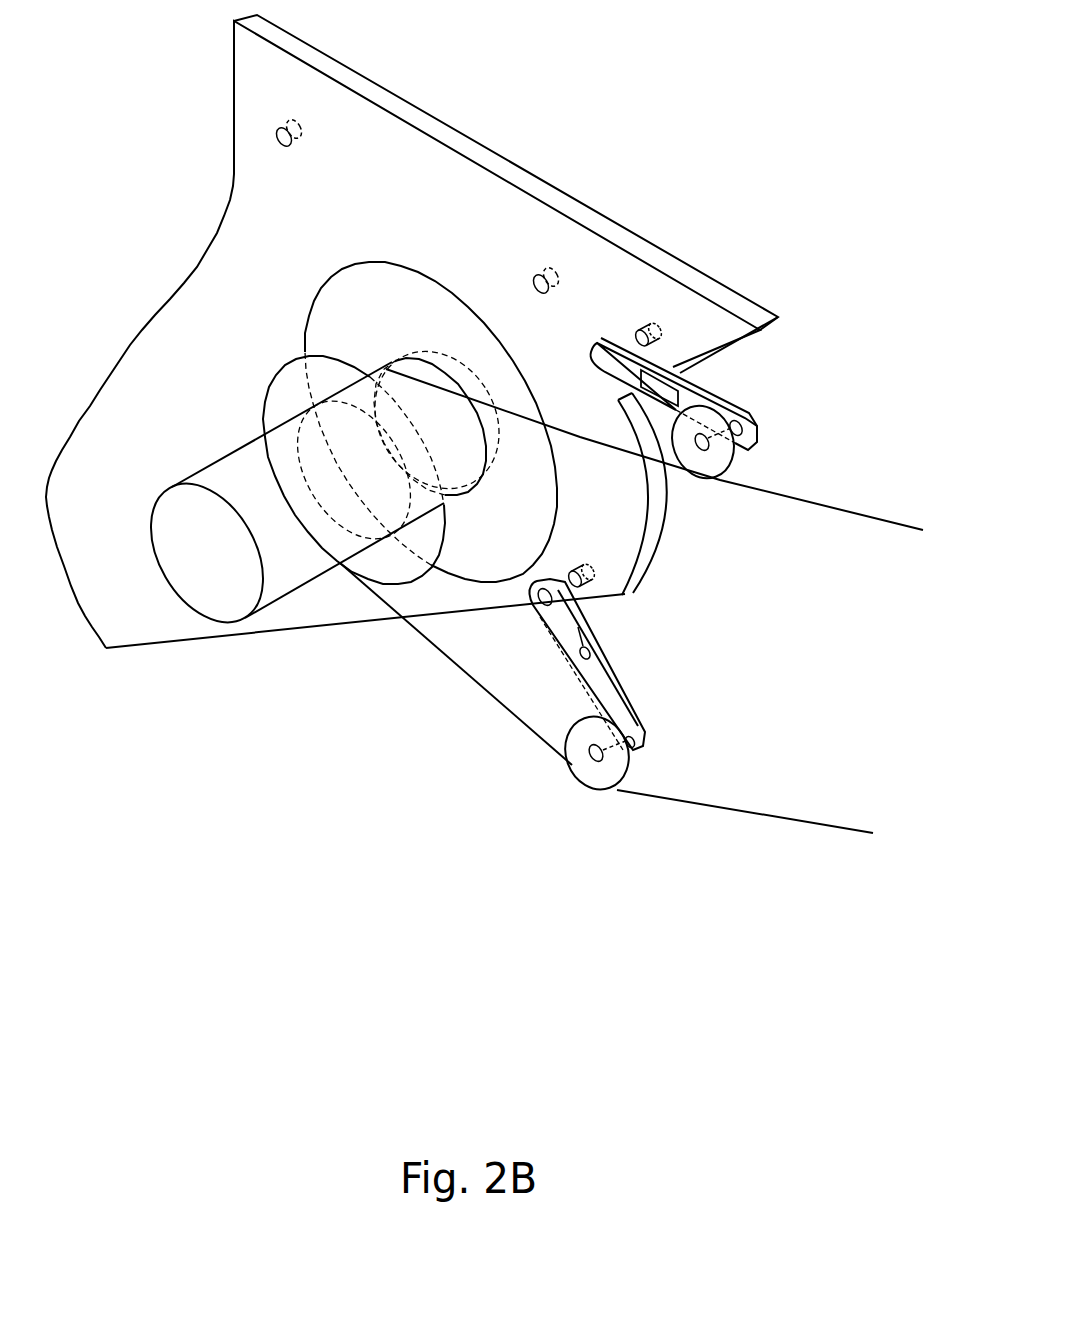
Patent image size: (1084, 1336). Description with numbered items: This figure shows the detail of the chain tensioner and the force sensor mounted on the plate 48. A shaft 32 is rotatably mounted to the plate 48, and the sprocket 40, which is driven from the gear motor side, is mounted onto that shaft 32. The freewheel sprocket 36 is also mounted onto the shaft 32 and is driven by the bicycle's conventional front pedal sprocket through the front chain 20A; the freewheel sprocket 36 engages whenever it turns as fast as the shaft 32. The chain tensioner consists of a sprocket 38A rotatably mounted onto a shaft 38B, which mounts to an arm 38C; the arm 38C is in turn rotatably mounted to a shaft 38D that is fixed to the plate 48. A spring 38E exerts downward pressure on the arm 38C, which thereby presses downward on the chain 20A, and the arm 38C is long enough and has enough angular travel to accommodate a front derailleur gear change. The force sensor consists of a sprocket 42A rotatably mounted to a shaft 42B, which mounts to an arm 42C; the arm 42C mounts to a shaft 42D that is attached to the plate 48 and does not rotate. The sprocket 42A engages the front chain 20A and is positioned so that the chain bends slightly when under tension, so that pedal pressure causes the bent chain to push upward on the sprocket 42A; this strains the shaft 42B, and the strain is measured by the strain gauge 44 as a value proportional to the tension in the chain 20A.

The front chain 20A is at (893, 528).
The shaft 32 is at (293, 602).
The freewheel sprocket 36 is at (270, 363).
The sprocket 38A is at (590, 790).
The shaft 38B is at (633, 747).
The arm 38C is at (638, 700).
The shaft 38D is at (597, 590).
The spring 38E is at (605, 652).
The sprocket 40 is at (325, 263).
The sprocket 42A is at (720, 490).
The shaft 42B is at (740, 443).
The arm 42C is at (735, 400).
The shaft 42D is at (630, 332).
The strain gauge 44 is at (682, 398).
The plate 48 is at (500, 148).